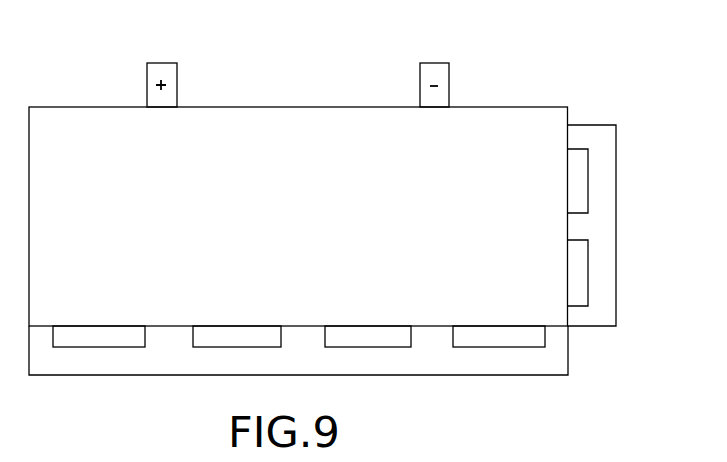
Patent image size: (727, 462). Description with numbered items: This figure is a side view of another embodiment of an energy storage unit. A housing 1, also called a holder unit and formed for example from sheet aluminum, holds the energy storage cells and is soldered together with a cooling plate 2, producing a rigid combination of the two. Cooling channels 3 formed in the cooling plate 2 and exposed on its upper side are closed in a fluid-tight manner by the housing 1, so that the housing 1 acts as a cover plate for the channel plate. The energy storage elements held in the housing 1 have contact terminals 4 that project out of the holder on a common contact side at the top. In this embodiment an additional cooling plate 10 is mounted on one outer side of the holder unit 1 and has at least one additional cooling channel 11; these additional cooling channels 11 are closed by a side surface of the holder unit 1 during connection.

The housing 1 is at (568, 119).
The cooling plate 2 is at (481, 374).
The cooling channels 3 is at (85, 340).
The contact terminals 4 is at (163, 63).
The additional cooling plate 10 is at (616, 258).
The additional cooling channel 11 is at (582, 177).